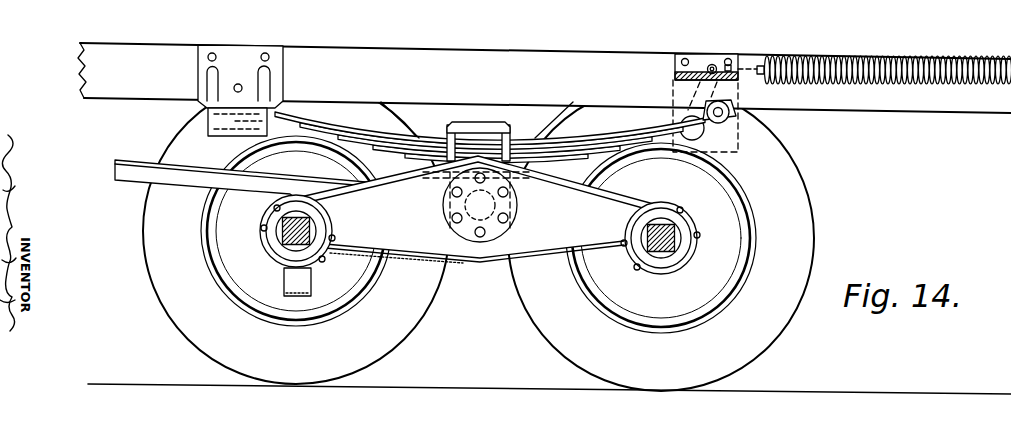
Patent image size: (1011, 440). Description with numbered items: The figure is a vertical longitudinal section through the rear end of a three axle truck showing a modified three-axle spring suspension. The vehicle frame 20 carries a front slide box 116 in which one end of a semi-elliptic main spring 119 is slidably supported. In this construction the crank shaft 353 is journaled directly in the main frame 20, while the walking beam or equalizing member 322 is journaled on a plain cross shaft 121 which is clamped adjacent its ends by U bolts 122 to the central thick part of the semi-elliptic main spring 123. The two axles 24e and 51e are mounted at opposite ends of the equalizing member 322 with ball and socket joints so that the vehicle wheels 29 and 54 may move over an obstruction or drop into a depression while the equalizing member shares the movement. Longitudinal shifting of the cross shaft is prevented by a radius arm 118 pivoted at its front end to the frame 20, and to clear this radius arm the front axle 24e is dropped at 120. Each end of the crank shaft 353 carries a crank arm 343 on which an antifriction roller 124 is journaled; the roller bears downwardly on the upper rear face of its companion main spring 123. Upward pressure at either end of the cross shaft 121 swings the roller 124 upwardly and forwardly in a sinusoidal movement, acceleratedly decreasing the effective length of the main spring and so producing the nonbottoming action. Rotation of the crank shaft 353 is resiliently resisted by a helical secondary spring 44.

The vehicle frame 20 is at (95, 72).
The front slide box 116 is at (231, 85).
The radius arm 118 is at (124, 178).
The semi-elliptic main spring 119 is at (535, 143).
The U bolt 122 is at (497, 127).
The semi-elliptic main spring 123 is at (403, 140).
The plain cross shaft 121 is at (443, 203).
The front axle 24e is at (275, 239).
The drop of front axle 120 is at (284, 278).
The equalizing member 322 is at (474, 258).
The vehicle wheel 29 is at (385, 337).
The vehicle wheel 54 is at (745, 335).
The third axle 51e is at (675, 248).
The antifriction roller 124 is at (735, 104).
The crank arm 343 is at (718, 134).
The crank shaft 353 is at (688, 148).
The helical secondary spring 44 is at (903, 85).